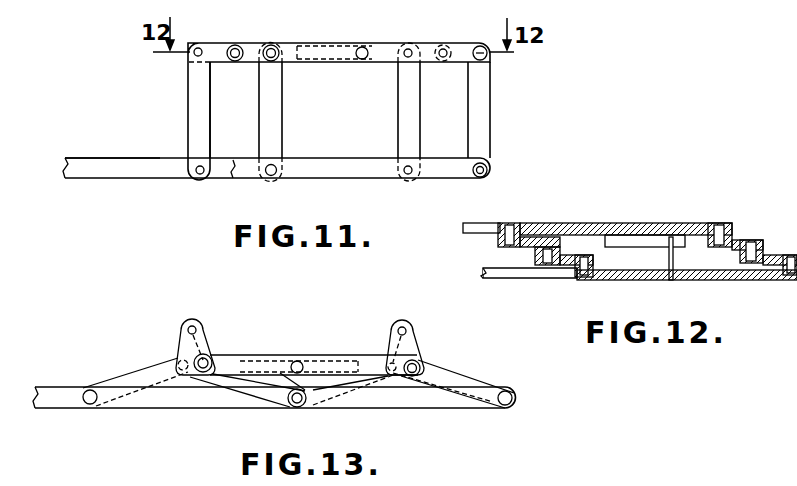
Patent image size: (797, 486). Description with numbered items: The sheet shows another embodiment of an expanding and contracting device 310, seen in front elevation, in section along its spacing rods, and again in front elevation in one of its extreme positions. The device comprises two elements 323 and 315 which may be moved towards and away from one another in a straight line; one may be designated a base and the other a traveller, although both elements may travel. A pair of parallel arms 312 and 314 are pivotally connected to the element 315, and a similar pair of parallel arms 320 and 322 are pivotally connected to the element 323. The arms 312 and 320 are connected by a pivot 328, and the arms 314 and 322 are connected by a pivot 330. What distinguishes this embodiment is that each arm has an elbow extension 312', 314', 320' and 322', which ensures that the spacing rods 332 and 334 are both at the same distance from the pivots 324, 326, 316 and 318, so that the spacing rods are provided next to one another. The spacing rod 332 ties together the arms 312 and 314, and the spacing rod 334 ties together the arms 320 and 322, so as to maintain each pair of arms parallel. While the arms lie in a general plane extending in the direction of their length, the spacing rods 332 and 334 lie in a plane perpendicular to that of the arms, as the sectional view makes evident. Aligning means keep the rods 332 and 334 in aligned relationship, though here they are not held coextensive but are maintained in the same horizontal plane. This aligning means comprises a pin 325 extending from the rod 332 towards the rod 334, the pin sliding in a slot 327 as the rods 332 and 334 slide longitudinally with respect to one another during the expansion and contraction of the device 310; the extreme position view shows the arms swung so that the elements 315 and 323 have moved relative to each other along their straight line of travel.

In FIG. 11, the expanding and contracting device 310 is at (503, 121).
In FIG. 11, the arm 312 is at (292, 100).
In FIG. 13, the arm 312 is at (135, 374).
In FIG. 11, the elbow extension 312' is at (271, 40).
In FIG. 13, the elbow extension 312' is at (230, 344).
In FIG. 11, the arm 314 is at (486, 111).
In FIG. 13, the arm 314 is at (362, 402).
In FIG. 11, the elbow extension 314' is at (458, 67).
In FIG. 13, the elbow extension 314' is at (428, 352).
In FIG. 11, the element 315 is at (461, 151).
In FIG. 12, the element 315 is at (520, 275).
In FIG. 13, the element 315 is at (200, 398).
In FIG. 11, the pivot 316 is at (276, 165).
In FIG. 11, the pivot 318 is at (488, 165).
In FIG. 11, the arm 320 is at (201, 99).
In FIG. 11, the elbow extension 320' is at (205, 37).
In FIG. 11, the arm 322 is at (412, 100).
In FIG. 11, the elbow extension 322' is at (413, 38).
In FIG. 13, the elbow extension 322' is at (453, 379).
In FIG. 11, the element 323 is at (98, 167).
In FIG. 12, the element 323 is at (477, 227).
In FIG. 11, the pivot 324 is at (197, 167).
In FIG. 11, the pin 325 is at (362, 48).
In FIG. 12, the pin 325 is at (673, 263).
In FIG. 11, the pivot 326 is at (405, 166).
In FIG. 11, the slot 327 is at (327, 35).
In FIG. 11, the pivot 328 is at (236, 45).
In FIG. 13, the pivot 328 is at (193, 326).
In FIG. 11, the pivot 330 is at (443, 48).
In FIG. 13, the pivot 330 is at (404, 329).
In FIG. 12, the spacing rod 332 is at (727, 280).
In FIG. 12, the spacing rod 334 is at (645, 224).